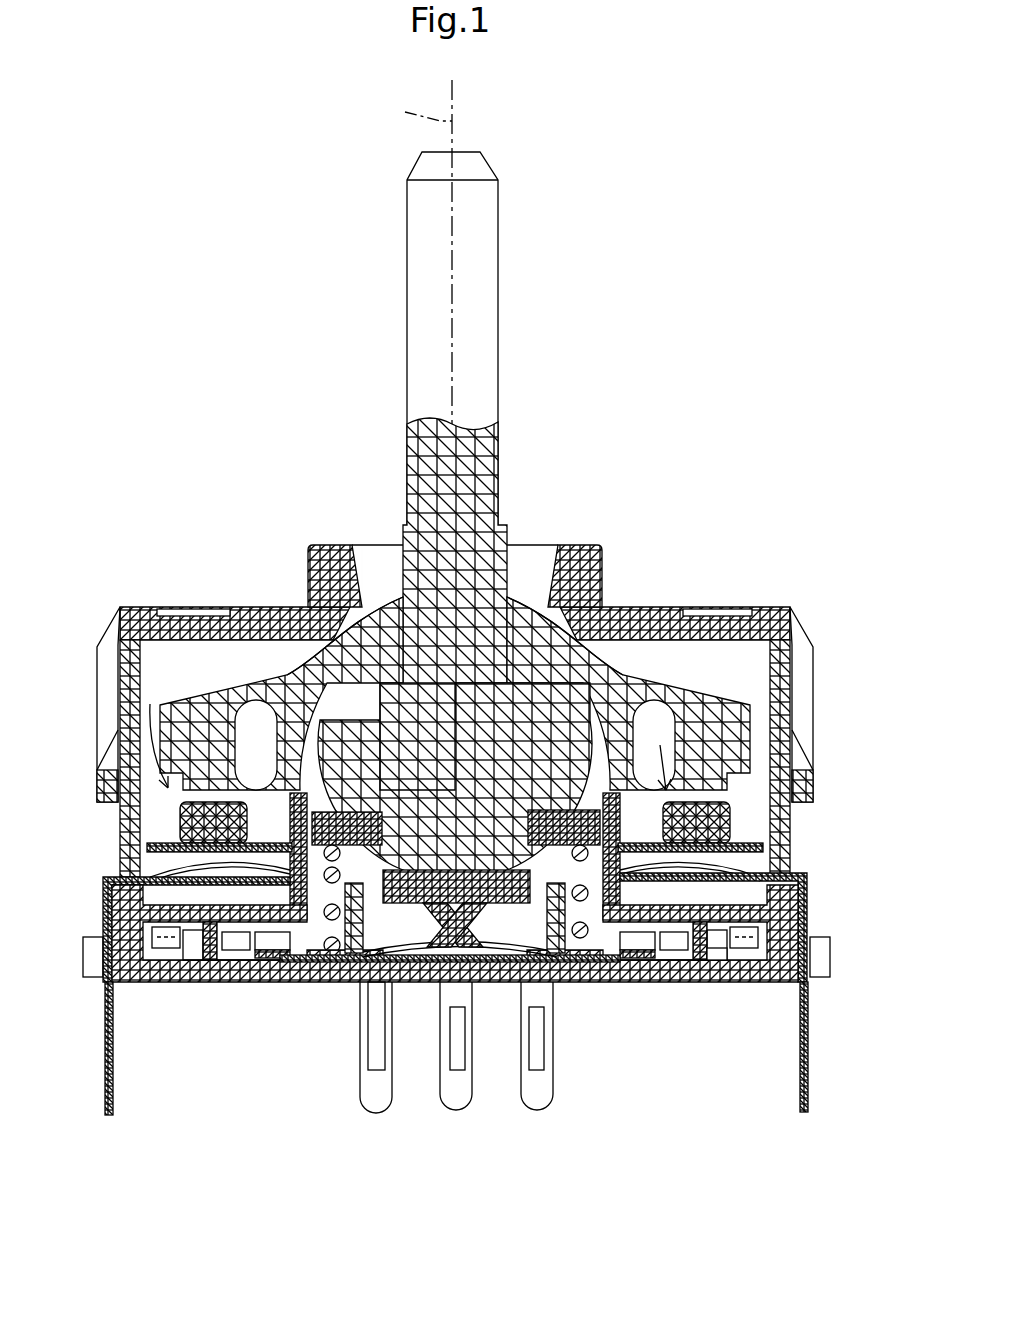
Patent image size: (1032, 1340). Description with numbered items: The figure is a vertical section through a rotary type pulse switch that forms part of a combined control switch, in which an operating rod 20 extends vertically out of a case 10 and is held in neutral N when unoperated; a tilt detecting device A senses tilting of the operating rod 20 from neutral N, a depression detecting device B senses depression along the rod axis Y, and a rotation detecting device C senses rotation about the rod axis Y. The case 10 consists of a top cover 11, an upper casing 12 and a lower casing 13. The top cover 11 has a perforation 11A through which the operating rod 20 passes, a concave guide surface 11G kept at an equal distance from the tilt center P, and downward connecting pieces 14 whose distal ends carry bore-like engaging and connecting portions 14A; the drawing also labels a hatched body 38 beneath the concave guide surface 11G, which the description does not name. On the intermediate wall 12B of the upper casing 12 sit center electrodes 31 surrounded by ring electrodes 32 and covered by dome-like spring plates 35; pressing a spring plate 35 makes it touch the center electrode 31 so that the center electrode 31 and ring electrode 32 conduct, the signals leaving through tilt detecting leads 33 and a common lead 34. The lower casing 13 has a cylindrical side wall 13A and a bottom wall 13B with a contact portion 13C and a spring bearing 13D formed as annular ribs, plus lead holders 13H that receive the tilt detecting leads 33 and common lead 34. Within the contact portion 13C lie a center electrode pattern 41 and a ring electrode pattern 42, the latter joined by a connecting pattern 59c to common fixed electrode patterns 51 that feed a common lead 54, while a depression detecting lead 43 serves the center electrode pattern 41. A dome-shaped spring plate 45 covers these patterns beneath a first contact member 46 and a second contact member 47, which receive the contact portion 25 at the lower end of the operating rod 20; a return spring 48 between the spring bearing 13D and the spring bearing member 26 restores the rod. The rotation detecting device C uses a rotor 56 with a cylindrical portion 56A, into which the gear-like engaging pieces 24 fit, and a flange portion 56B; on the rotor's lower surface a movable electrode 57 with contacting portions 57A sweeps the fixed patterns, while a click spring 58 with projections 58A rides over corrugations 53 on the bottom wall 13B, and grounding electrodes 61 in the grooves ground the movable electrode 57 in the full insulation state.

The case 10 is at (140, 608).
The top cover 11 is at (678, 607).
The perforation 11A is at (392, 555).
The concave guide surface 11G is at (302, 657).
The upper casing 12 is at (100, 633).
The intermediate wall 12B is at (806, 874).
The lower casing 13 is at (822, 986).
The cylindrical side wall 13A is at (800, 916).
The bottom wall 13B is at (712, 990).
The contact portion 13C is at (560, 986).
The spring bearing 13D is at (606, 986).
The lead holders 13H is at (90, 984).
The connecting pieces 14 is at (97, 682).
The engaging and connecting portions 14A is at (116, 736).
The operating rod 20 is at (512, 352).
The engaging pieces 24 is at (545, 726).
The contact portion 25 is at (566, 860).
The spring bearing member 26 is at (312, 826).
The center electrodes 31 is at (148, 845).
The ring electrodes 32 is at (152, 872).
The tilt detecting leads 33 is at (104, 1086).
The common lead 34 is at (366, 1102).
The spring plates 35 is at (183, 815).
The rotor (tilting member) 38 is at (660, 682).
The center electrode pattern 41 is at (432, 984).
The ring electrode pattern 42 is at (360, 980).
The depression detecting lead 43 is at (458, 1108).
The spring plate 45 is at (498, 984).
The first contact member 46 is at (396, 984).
The second contact member 47 is at (505, 984).
The return spring 48 is at (570, 984).
The common fixed electrode patterns 51 is at (240, 980).
The corrugations 53 is at (203, 980).
The common lead 54 is at (538, 1108).
The rotor 56 is at (290, 800).
The cylindrical portion 56A is at (298, 980).
The flange portion 56B is at (630, 984).
The movable electrode 57 is at (700, 984).
The contacting portions 57A is at (260, 980).
The click spring 58 is at (150, 936).
The projections 58A is at (185, 990).
The connecting pattern 59c is at (285, 986).
The grounding electrodes 61 is at (160, 980).
The tilt detecting device A is at (407, 732).
The depression detecting device B is at (395, 1030).
The rotation detecting device C is at (148, 946).
The neutral N is at (452, 472).
The tilt center P is at (440, 786).
The rod axis Y is at (417, 110).